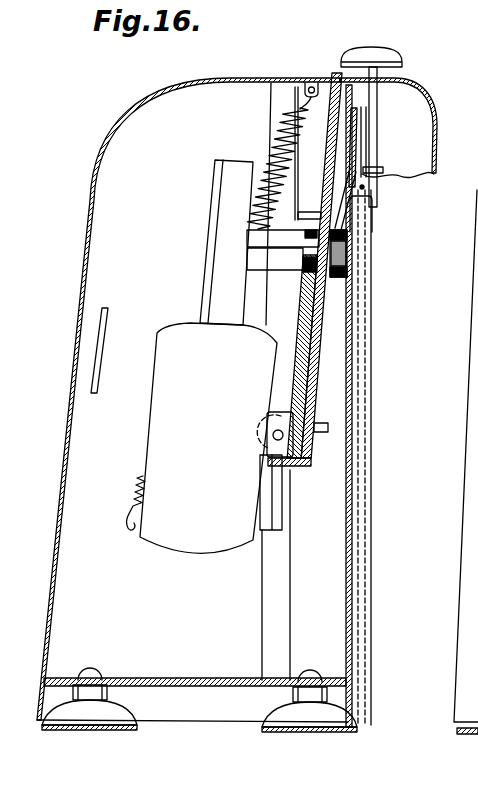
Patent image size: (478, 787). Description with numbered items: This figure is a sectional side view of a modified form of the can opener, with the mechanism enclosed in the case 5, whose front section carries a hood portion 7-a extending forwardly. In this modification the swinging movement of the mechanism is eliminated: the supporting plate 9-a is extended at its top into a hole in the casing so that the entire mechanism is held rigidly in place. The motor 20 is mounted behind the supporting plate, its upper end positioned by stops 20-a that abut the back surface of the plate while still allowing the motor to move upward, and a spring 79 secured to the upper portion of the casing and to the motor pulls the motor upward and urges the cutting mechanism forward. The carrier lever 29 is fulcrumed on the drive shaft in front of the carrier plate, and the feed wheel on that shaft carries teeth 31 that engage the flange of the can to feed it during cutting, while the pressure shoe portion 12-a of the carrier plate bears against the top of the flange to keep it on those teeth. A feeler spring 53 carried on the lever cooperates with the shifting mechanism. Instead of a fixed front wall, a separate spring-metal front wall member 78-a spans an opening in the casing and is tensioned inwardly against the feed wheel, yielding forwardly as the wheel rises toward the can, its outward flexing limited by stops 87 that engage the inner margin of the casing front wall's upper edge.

The case 5 is at (62, 465).
The hood portion 7-a is at (438, 145).
The supporting plate 9-a is at (297, 452).
The pressure shoe portion 12-a is at (368, 187).
The motor 20 is at (193, 546).
The stops 20-a is at (257, 238).
The carrier lever 29 is at (302, 396).
The teeth 31 is at (340, 257).
The spring 53 is at (367, 133).
The front wall member 78-a is at (348, 340).
The spring 79 is at (287, 131).
The stops 87 is at (355, 210).